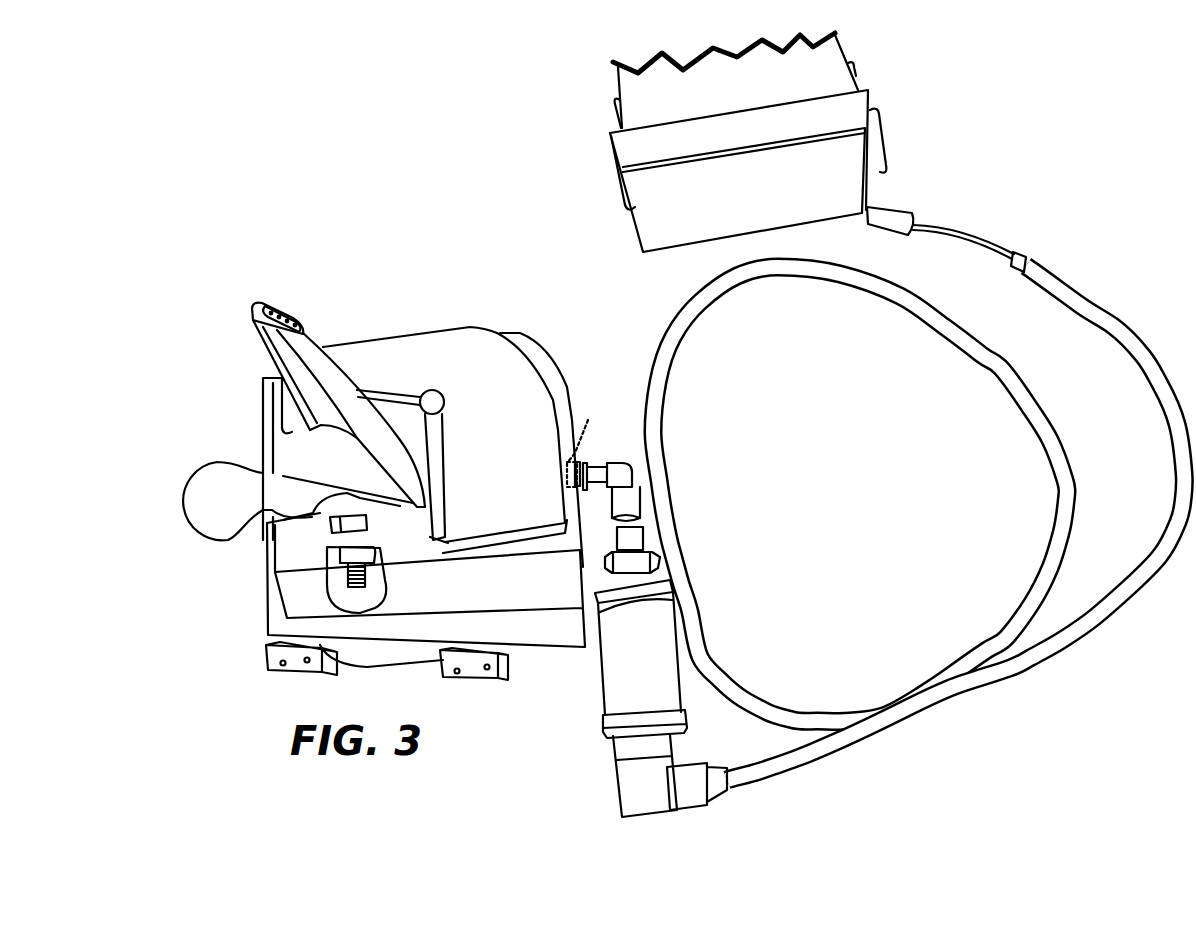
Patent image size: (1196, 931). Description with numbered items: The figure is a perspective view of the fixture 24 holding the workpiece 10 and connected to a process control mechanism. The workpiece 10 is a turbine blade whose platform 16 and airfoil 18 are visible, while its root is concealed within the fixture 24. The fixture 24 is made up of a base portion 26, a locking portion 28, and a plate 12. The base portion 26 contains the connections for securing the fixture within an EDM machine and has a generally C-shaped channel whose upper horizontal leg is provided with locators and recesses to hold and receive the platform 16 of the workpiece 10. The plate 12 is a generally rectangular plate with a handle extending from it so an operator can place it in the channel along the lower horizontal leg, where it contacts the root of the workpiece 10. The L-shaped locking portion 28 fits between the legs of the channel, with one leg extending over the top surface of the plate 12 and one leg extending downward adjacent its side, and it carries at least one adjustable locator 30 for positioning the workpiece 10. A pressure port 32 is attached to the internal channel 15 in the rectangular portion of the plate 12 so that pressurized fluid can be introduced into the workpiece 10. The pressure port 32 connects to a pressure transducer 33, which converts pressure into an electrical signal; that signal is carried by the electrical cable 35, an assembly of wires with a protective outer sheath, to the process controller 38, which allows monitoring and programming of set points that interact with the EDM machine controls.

The workpiece 10 is at (301, 416).
The plate 12 is at (183, 485).
The internal channel 15 is at (584, 442).
The platform 16 is at (283, 405).
The airfoil 18 is at (307, 323).
The fixture 24 is at (372, 596).
The base portion 26 is at (260, 605).
The locking portion 28 is at (563, 392).
The adjustable locator 30 is at (367, 580).
The pressure port 32 is at (597, 470).
The pressure transducer 33 is at (657, 635).
The electrical cable 35 is at (737, 690).
The process controller 38 is at (645, 202).